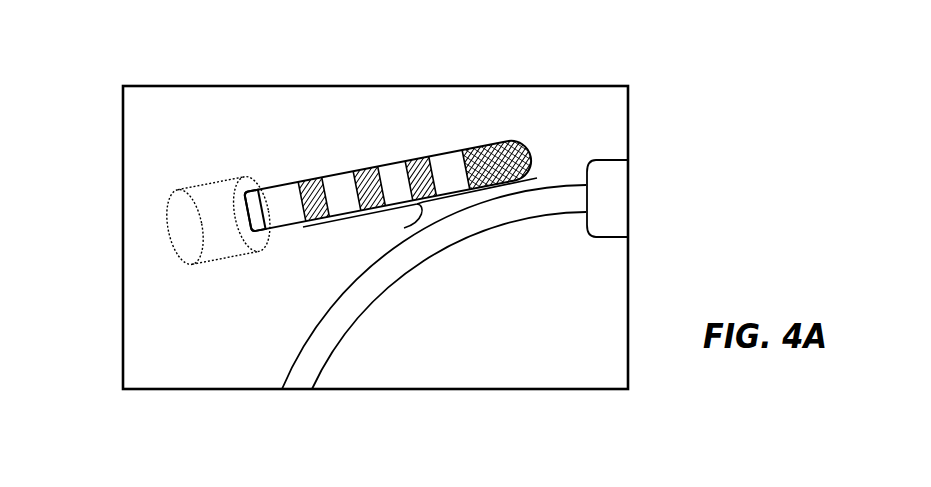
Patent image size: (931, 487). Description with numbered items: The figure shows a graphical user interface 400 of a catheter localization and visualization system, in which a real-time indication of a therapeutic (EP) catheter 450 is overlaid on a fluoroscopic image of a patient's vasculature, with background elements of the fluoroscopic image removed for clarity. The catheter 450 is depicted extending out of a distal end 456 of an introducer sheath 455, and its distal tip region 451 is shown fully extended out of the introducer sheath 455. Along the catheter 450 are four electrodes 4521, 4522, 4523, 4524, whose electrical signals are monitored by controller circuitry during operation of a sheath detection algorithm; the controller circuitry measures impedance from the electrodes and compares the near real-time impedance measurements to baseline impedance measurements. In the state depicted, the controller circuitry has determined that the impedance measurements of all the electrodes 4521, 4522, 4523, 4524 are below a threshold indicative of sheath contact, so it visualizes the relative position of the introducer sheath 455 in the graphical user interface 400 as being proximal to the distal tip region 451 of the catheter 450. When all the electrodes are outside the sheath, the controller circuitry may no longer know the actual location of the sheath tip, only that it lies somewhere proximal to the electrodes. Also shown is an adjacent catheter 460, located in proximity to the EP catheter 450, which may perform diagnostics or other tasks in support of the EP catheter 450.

The graphical user interface 400 is at (672, 138).
The therapeutic (EP) catheter 450 is at (391, 160).
The distal tip region 451 is at (404, 227).
The electrode 4521 is at (308, 180).
The electrode 4522 is at (361, 170).
The electrode 4523 is at (415, 157).
The electrode 4524 is at (489, 142).
The introducer sheath 455 is at (204, 181).
The distal end 456 is at (256, 180).
The adjacent catheter 460 is at (420, 265).